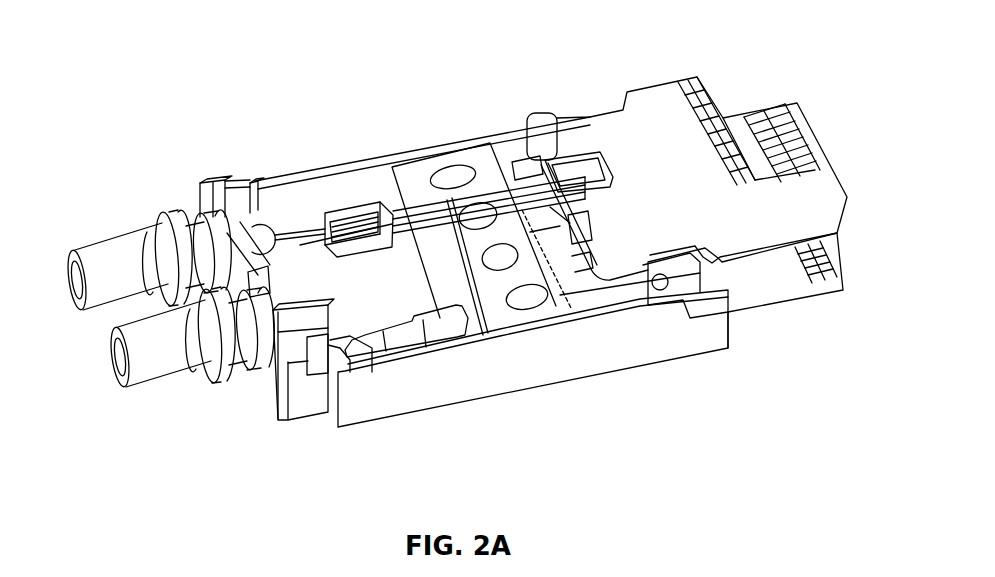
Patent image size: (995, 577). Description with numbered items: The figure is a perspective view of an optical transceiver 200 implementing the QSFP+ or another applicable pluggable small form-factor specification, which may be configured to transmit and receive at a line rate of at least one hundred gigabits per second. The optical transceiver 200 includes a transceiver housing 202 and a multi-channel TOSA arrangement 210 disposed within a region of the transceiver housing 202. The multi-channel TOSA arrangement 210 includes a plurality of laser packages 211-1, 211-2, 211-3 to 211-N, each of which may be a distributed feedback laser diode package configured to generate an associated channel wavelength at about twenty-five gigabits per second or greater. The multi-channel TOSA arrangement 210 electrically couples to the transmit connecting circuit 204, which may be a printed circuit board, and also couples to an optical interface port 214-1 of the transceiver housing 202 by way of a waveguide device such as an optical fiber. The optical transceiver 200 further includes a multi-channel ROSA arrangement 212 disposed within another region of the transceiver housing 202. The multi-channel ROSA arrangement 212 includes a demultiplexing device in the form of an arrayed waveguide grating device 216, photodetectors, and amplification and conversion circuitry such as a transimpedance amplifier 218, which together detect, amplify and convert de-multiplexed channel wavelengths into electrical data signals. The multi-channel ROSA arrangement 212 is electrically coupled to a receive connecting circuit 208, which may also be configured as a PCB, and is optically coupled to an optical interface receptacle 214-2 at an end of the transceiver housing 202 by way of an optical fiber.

The optical transceiver 200 is at (250, 84).
The transceiver housing 202 is at (427, 378).
The transmit connecting circuit 204 is at (765, 270).
The receive connecting circuit 208 is at (592, 118).
The multi-channel TOSA arrangement 210 is at (559, 307).
The laser package 211-1 is at (522, 165).
The laser package 211-2 is at (545, 228).
The laser package 211-3 is at (575, 262).
The laser package 211-N is at (603, 287).
The multi-channel ROSA arrangement 212 is at (476, 170).
The optical interface port 214-1 is at (120, 270).
The optical interface receptacle 214-2 is at (170, 352).
The arrayed waveguide grating (AWG) device 216 is at (348, 215).
The transimpedance amplifier (TIA) 218 is at (583, 168).